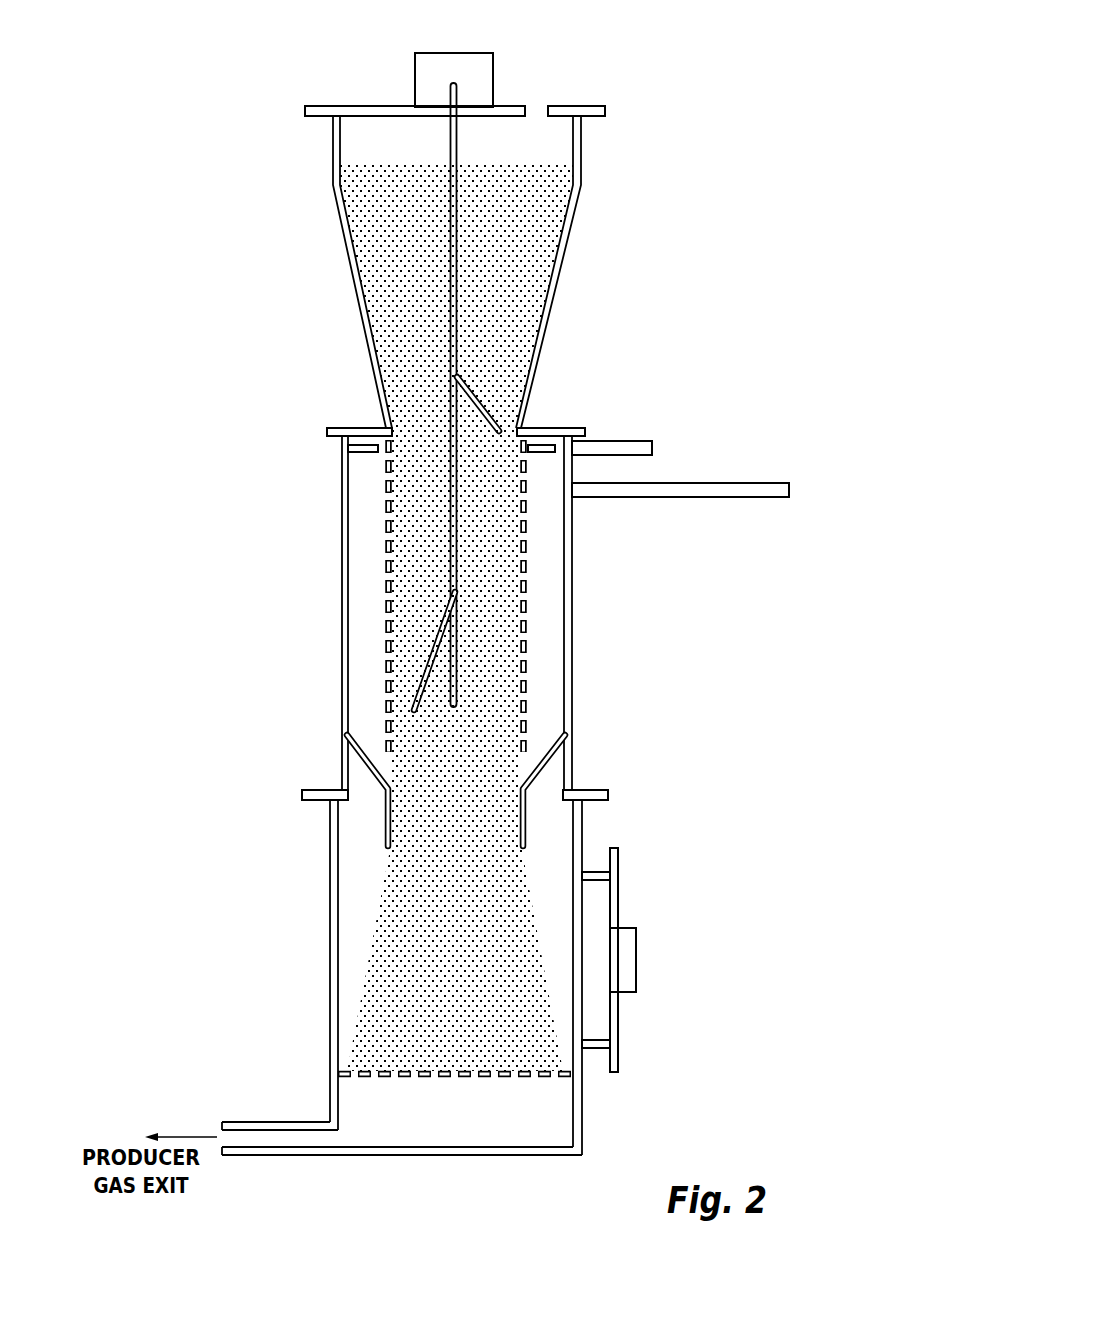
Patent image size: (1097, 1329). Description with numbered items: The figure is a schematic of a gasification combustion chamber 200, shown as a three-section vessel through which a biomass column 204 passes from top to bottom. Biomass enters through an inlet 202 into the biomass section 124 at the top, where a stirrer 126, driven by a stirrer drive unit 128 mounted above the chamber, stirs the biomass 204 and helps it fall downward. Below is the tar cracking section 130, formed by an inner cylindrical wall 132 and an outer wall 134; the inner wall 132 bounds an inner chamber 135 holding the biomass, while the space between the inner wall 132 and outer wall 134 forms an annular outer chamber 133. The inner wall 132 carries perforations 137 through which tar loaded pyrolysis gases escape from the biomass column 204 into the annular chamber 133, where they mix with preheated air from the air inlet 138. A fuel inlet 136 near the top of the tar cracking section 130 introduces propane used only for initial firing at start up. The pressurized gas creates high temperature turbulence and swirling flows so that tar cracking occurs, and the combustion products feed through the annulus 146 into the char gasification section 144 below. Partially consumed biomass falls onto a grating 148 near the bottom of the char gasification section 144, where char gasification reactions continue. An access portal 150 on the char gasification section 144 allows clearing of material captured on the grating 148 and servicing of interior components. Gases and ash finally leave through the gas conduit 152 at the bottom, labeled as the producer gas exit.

The combustion chamber 200 is at (648, 96).
The inlet 202 is at (548, 104).
The stirrer drive unit 128 is at (415, 53).
The biomass section 124 is at (522, 213).
The stirrer 126 is at (458, 255).
The tar cracking section 130 is at (180, 433).
The outer wall 134 is at (342, 573).
The annular outer chamber 133 is at (552, 655).
The fuel inlet 136 is at (640, 443).
The air inlet 138 is at (745, 493).
The inner chamber 135 is at (505, 591).
The inner cylindrical wall 132 is at (524, 637).
The perforations 137 is at (526, 665).
The annulus 146 is at (528, 826).
The char gasification section 144 is at (582, 945).
The access portal 150 is at (618, 1018).
The biomass column 204 is at (540, 1010).
The grating 148 is at (463, 1077).
The gas conduit 152 is at (257, 1155).